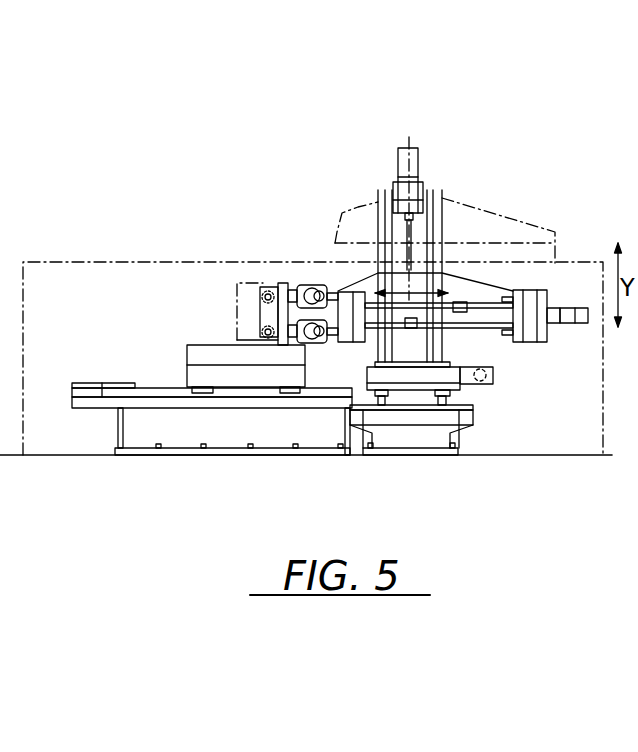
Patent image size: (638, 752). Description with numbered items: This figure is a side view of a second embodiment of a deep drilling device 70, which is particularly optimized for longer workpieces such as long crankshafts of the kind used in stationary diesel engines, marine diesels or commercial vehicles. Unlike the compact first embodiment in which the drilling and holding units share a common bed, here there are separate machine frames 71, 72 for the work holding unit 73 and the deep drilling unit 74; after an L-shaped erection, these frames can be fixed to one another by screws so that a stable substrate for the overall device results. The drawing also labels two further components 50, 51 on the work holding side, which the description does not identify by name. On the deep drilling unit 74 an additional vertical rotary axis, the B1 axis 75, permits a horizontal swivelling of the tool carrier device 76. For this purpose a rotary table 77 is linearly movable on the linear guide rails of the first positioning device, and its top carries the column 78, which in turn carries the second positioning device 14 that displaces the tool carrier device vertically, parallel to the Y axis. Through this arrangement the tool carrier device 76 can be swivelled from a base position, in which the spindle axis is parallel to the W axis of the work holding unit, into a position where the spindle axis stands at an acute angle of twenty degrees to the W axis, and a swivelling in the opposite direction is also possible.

The second positioning device 14 is at (370, 253).
The transfer unit 50 is at (205, 353).
The support plate 51 is at (160, 375).
The deep drilling device 70 is at (307, 170).
The machine frame 71 is at (173, 433).
The machine frame 72 is at (395, 437).
The work holding unit 73 is at (222, 290).
The deep drilling unit 74 is at (400, 135).
The B1 axis 75 is at (415, 423).
The tool carrier device 76 is at (553, 287).
The rotary table 77 is at (490, 390).
The column 78 is at (447, 177).